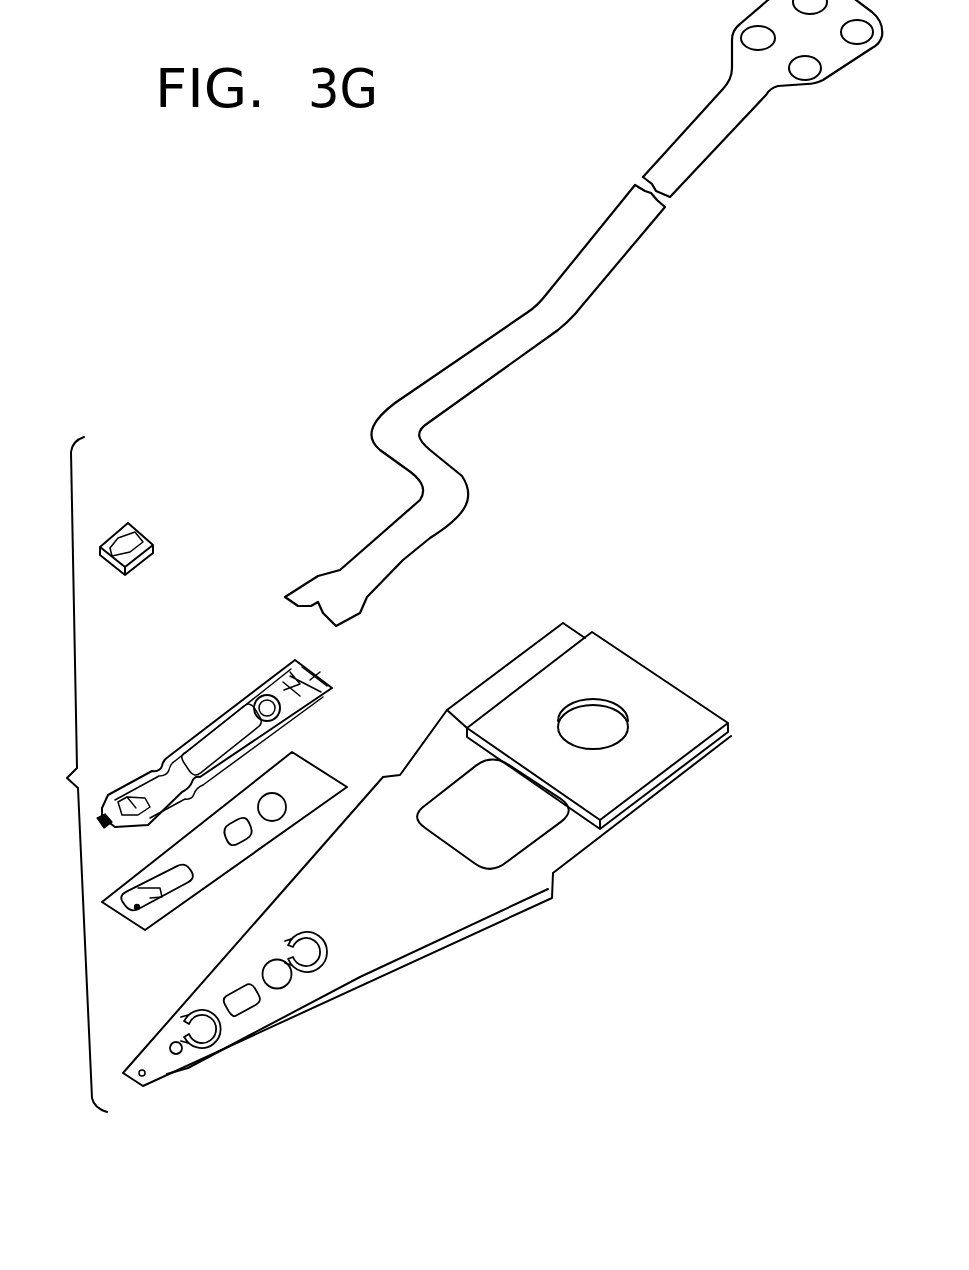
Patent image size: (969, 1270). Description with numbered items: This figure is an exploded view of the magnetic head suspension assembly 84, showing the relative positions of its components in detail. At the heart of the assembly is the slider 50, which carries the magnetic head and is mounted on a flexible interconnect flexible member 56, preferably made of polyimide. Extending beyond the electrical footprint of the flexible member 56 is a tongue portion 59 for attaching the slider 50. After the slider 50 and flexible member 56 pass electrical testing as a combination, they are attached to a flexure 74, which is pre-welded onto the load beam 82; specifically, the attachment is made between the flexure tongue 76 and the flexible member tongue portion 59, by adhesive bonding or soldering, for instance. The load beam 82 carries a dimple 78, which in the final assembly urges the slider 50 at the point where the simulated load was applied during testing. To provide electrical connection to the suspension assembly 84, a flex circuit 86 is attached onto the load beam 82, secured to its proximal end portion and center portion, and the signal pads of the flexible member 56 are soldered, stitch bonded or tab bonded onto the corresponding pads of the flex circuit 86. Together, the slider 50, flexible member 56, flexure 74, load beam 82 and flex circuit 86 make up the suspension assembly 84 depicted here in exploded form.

The slider 50 is at (138, 538).
The flexible member 56 is at (191, 735).
The tongue portion 59 is at (133, 806).
The flexure 74 is at (235, 867).
The flexure tongue 76 is at (157, 893).
The dimple 78 is at (142, 1067).
The load beam 82 is at (487, 928).
The suspension assembly 84 is at (65, 774).
The flex circuit 86 is at (592, 263).